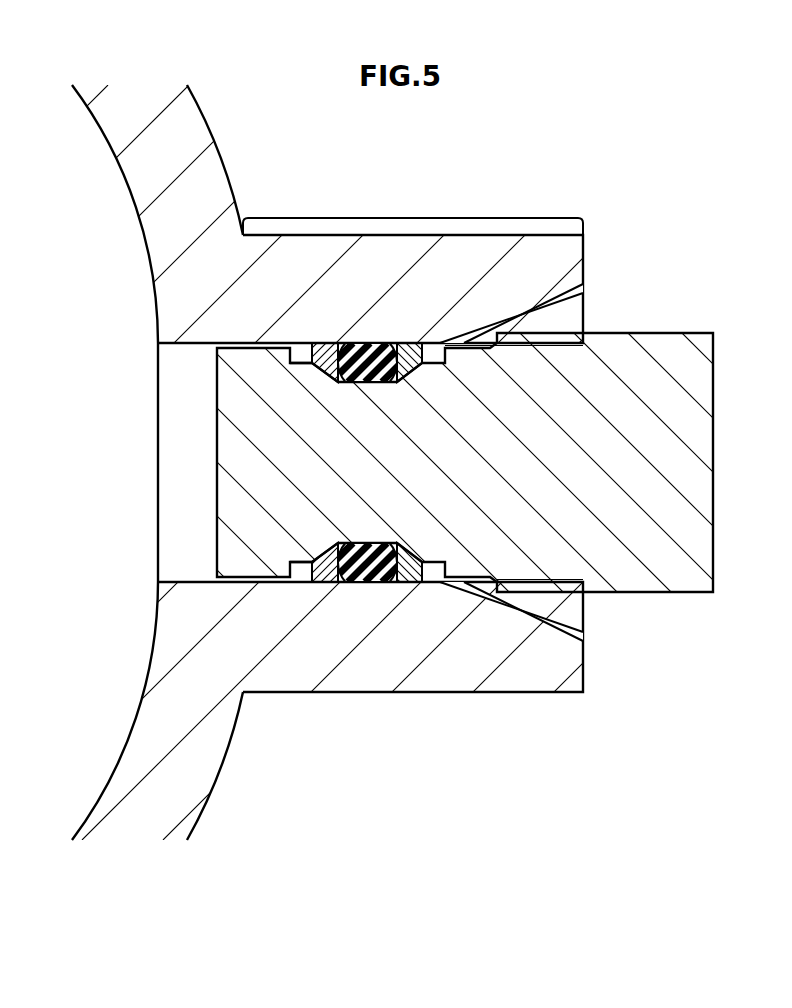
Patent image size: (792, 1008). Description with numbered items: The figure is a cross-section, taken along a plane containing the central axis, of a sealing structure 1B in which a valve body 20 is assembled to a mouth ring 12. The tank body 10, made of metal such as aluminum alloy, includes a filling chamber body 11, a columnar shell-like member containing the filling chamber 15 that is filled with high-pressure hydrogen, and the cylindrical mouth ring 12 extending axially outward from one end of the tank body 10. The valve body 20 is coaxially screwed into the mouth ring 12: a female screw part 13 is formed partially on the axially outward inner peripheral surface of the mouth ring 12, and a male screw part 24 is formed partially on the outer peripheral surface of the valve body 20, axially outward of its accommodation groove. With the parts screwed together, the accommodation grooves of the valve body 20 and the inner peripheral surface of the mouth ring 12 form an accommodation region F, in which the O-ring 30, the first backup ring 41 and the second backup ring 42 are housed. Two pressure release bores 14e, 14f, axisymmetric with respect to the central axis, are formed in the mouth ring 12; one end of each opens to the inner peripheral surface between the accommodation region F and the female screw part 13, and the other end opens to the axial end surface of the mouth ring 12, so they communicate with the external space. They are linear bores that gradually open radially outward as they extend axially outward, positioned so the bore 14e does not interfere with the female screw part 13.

The sealing structure 1B is at (575, 157).
The tank body 10 is at (396, 462).
The filling chamber body 11 is at (208, 777).
The mouth ring 12 is at (416, 219).
The female screw part 13 is at (489, 338).
The pressure release bore 14e is at (525, 305).
The pressure release bore 14f is at (495, 612).
The filling chamber 15 is at (96, 474).
The valve body 20 is at (396, 464).
The male screw part 24 is at (597, 338).
The O-ring 30 is at (372, 352).
The first backup ring 41 is at (412, 350).
The second backup ring 42 is at (323, 352).
The accommodation region F is at (300, 349).